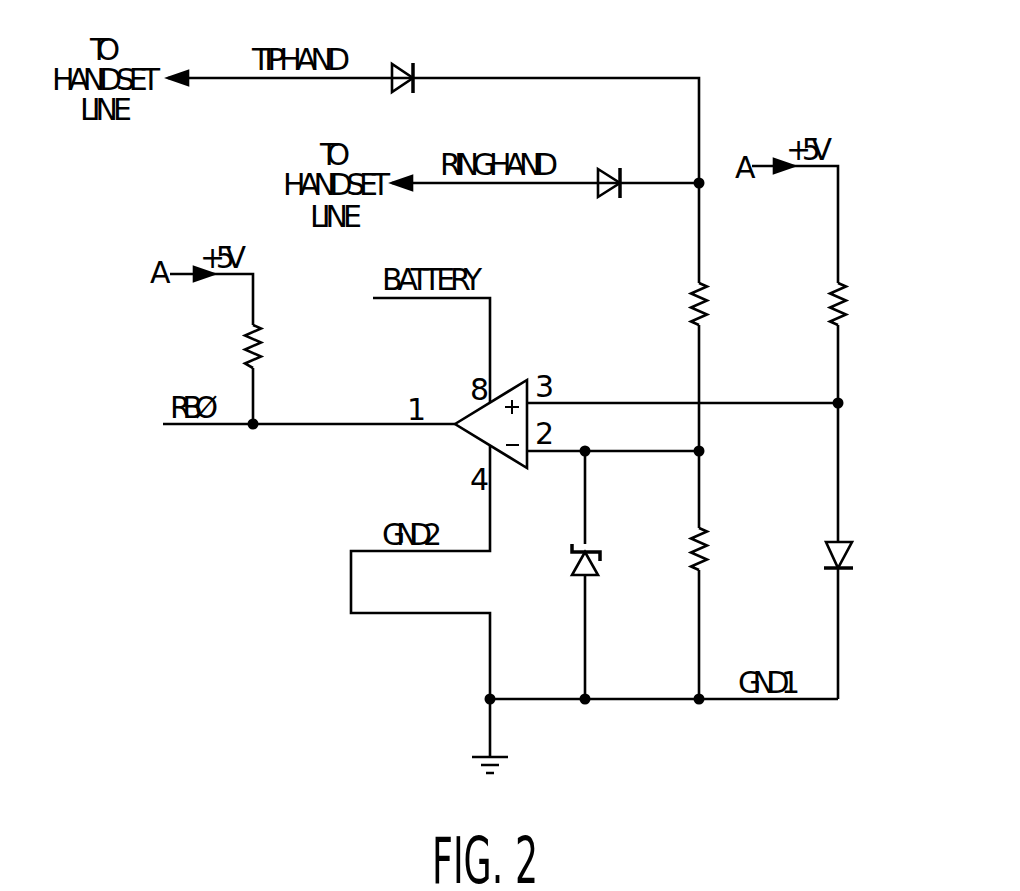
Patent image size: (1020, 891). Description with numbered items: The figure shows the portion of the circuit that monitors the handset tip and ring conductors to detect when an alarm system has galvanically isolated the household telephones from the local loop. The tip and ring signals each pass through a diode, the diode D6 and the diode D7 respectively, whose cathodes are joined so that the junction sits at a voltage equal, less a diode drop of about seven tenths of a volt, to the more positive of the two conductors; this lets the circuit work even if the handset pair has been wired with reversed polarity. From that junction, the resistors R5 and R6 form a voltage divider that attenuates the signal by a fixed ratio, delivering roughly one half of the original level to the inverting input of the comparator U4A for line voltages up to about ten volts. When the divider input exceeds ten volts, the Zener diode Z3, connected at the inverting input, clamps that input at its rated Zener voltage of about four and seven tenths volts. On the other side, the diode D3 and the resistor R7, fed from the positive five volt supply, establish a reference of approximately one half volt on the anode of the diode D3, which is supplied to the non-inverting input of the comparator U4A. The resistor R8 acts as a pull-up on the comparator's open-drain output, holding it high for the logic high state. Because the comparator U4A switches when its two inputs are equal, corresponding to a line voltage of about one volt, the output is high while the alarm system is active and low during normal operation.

The diode D6 is at (405, 46).
The diode D7 is at (610, 216).
The resistor R5 is at (730, 310).
The resistor R6 is at (730, 553).
The resistor R7 is at (868, 310).
The pull-up resistor R8 is at (278, 350).
The comparator U4A is at (528, 388).
The Zener diode Z3 is at (630, 579).
The diode D3 is at (877, 556).